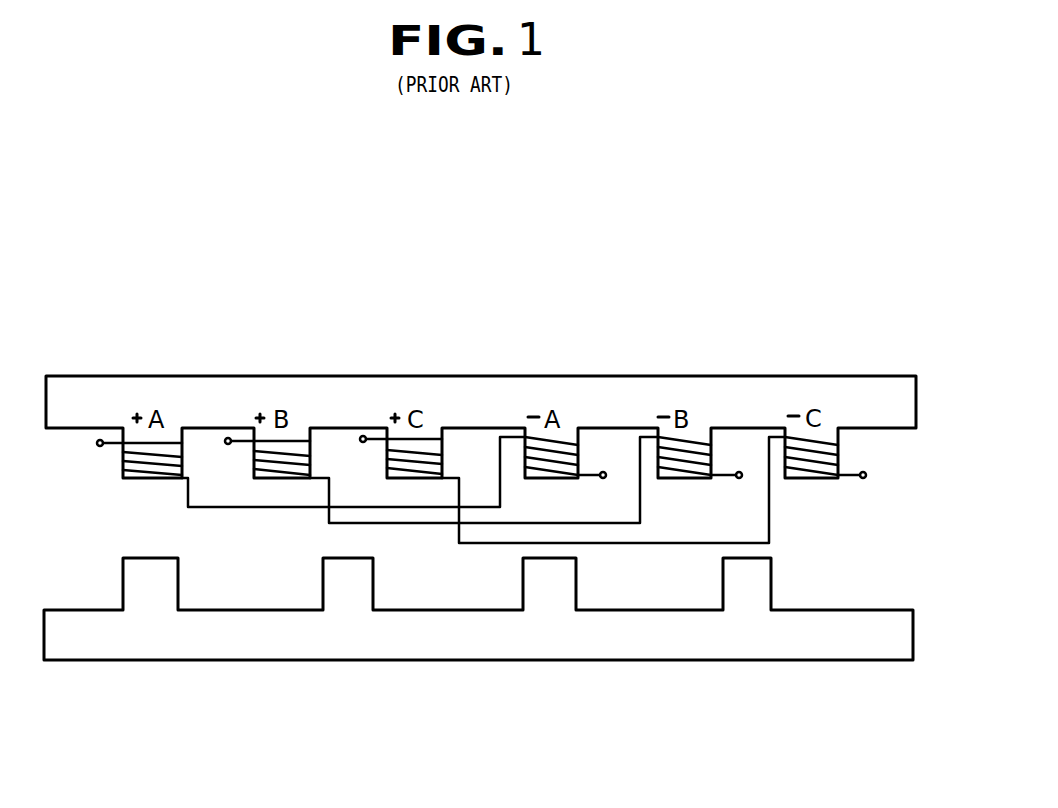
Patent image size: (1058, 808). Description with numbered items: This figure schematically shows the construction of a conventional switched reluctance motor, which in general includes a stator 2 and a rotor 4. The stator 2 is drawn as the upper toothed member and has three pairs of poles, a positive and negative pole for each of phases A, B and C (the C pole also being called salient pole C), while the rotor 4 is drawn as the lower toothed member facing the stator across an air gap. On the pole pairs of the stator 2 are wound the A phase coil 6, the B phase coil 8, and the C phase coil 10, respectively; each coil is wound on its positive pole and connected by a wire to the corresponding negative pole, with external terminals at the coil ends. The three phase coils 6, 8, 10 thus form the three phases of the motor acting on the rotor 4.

The stator 2 is at (874, 388).
The rotor 4 is at (879, 640).
The A phase coil 6 is at (127, 471).
The B phase coil 8 is at (263, 473).
The C phase coil 10 is at (431, 474).